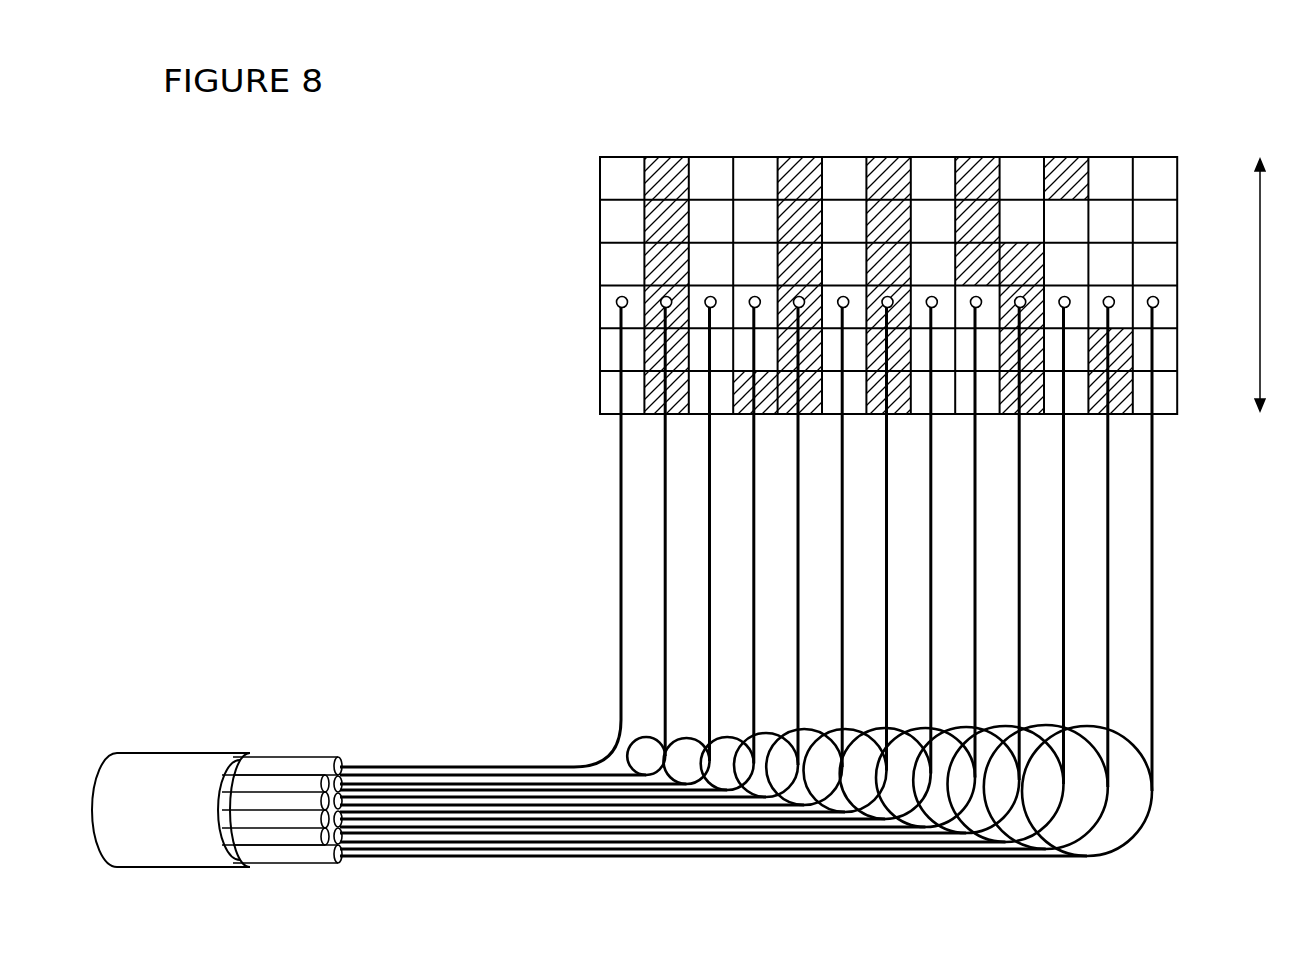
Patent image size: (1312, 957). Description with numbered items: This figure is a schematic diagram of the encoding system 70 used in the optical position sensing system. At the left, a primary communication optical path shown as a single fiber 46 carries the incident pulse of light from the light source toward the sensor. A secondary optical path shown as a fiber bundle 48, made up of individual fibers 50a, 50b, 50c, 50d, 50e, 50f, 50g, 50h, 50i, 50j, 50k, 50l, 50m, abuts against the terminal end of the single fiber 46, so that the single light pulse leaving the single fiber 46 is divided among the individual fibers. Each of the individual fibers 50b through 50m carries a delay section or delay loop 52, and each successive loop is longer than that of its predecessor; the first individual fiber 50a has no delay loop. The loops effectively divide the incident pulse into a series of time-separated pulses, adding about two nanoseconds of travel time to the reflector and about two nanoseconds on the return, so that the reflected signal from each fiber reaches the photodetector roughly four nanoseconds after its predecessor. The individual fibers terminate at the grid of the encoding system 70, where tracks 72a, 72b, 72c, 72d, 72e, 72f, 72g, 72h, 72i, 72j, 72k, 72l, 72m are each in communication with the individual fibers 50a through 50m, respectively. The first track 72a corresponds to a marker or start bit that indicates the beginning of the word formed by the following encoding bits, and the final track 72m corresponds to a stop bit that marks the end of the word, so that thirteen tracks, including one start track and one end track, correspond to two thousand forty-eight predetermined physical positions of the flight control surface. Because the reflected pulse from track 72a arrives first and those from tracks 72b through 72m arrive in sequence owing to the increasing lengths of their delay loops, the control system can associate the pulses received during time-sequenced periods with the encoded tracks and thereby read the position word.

The single fiber 46 is at (145, 757).
The fiber bundle 48 is at (278, 734).
The individual fiber 50a is at (621, 487).
The individual fiber 50b is at (665, 505).
The individual fiber 50c is at (709, 522).
The individual fiber 50d is at (754, 545).
The individual fiber 50e is at (798, 563).
The individual fiber 50f is at (842, 588).
The individual fiber 50g is at (886, 607).
The individual fiber 50h is at (931, 558).
The individual fiber 50i is at (975, 588).
The individual fiber 50j is at (1019, 628).
The individual fiber 50k is at (1063, 662).
The individual fiber 50l is at (1108, 690).
The individual fiber 50m is at (1152, 585).
The delay loop 52 is at (1133, 741).
The encoding system 70 is at (1213, 96).
The track 72a is at (627, 135).
The track 72b is at (671, 135).
The track 72c is at (716, 135).
The track 72d is at (760, 135).
The track 72e is at (804, 135).
The track 72f is at (848, 135).
The track 72g is at (892, 135).
The track 72h is at (937, 135).
The track 72i is at (981, 135).
The track 72j is at (1025, 135).
The track 72k is at (1070, 135).
The track 72l is at (1114, 135).
The track 72m is at (1158, 135).